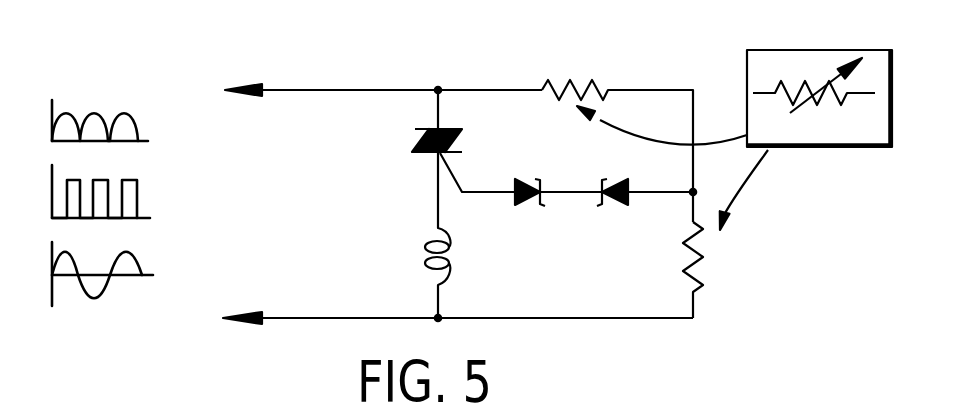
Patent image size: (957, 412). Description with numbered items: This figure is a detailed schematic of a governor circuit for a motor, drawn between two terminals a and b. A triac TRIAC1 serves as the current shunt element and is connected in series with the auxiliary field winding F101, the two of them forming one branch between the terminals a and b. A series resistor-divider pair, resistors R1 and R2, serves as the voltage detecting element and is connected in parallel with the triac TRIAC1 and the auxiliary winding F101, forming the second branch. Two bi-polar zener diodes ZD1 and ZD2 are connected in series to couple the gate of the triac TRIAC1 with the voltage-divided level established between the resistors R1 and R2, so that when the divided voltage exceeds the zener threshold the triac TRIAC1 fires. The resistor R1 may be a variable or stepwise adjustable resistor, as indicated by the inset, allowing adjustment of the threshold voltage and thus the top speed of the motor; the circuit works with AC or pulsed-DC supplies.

The terminal a is at (366, 87).
The terminal b is at (441, 315).
The resistor R1 is at (617, 136).
The resistor R2 is at (711, 270).
The triac TRIAC1 is at (413, 141).
The zener diode ZD1 is at (551, 209).
The zener diode ZD2 is at (640, 209).
The auxiliary field winding F101 is at (399, 255).